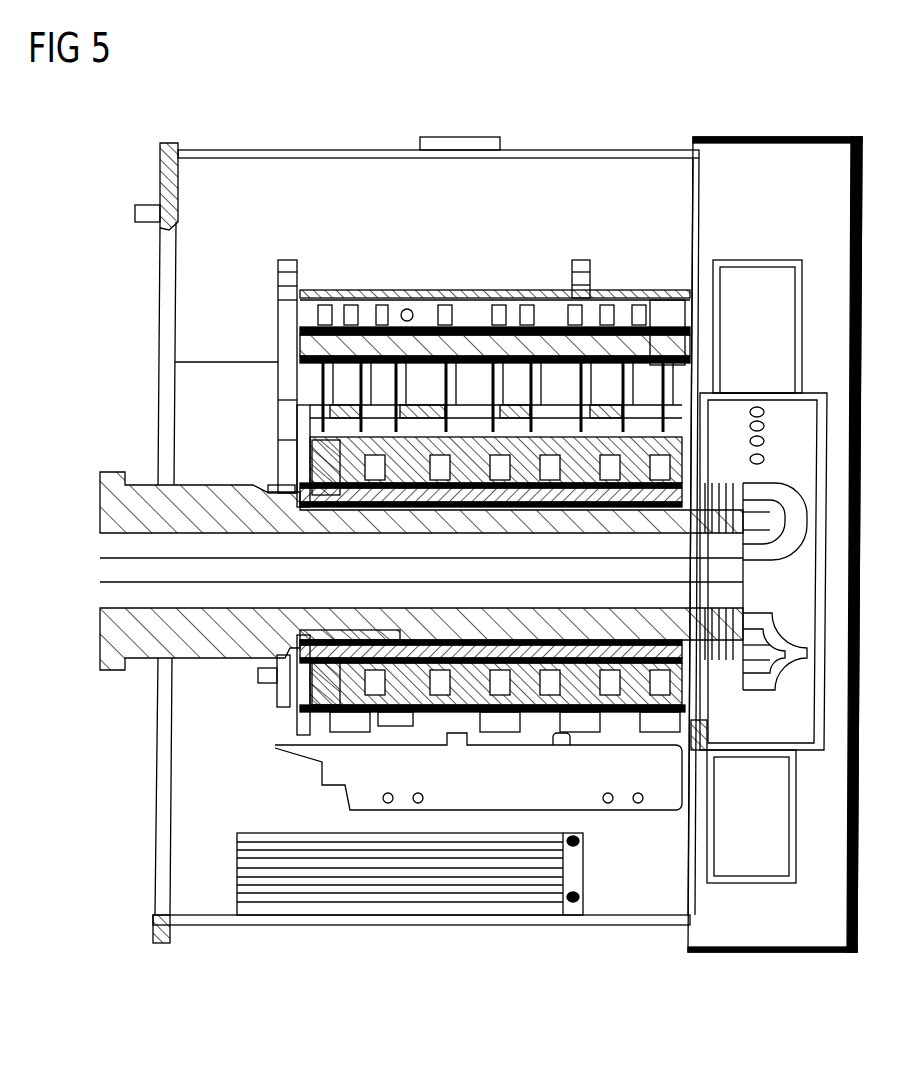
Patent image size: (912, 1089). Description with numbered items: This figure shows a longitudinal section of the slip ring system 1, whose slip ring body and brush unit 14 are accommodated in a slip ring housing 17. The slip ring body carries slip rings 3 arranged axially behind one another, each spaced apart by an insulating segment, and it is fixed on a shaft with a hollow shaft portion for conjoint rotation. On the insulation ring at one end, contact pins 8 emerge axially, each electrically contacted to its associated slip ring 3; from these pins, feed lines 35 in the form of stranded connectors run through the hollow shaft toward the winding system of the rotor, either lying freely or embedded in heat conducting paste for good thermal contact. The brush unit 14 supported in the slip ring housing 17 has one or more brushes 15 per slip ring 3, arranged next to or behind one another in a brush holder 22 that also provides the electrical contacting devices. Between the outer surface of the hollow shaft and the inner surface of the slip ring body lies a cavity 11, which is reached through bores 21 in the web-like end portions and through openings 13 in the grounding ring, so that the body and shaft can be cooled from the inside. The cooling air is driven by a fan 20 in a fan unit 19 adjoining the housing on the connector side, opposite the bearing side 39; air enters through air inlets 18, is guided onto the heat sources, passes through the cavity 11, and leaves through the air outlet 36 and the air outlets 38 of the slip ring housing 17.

The slip ring system 1 is at (473, 258).
The slip rings 3 is at (408, 712).
The contact pins 8 is at (808, 680).
The cavity 11 is at (515, 640).
The openings 13 is at (290, 490).
The brush unit 14 is at (278, 347).
The brushes 15 is at (388, 387).
The slip ring housing 17 is at (196, 186).
The air inlets 18 is at (300, 910).
The fan unit 19 is at (794, 124).
The fan 20 is at (802, 300).
The bores 21 is at (277, 493).
The brush holder 22 is at (443, 347).
The feed lines 35 is at (116, 595).
The air outlet 36 is at (805, 432).
The air outlets 38 is at (779, 953).
The bearing side 39 is at (73, 560).